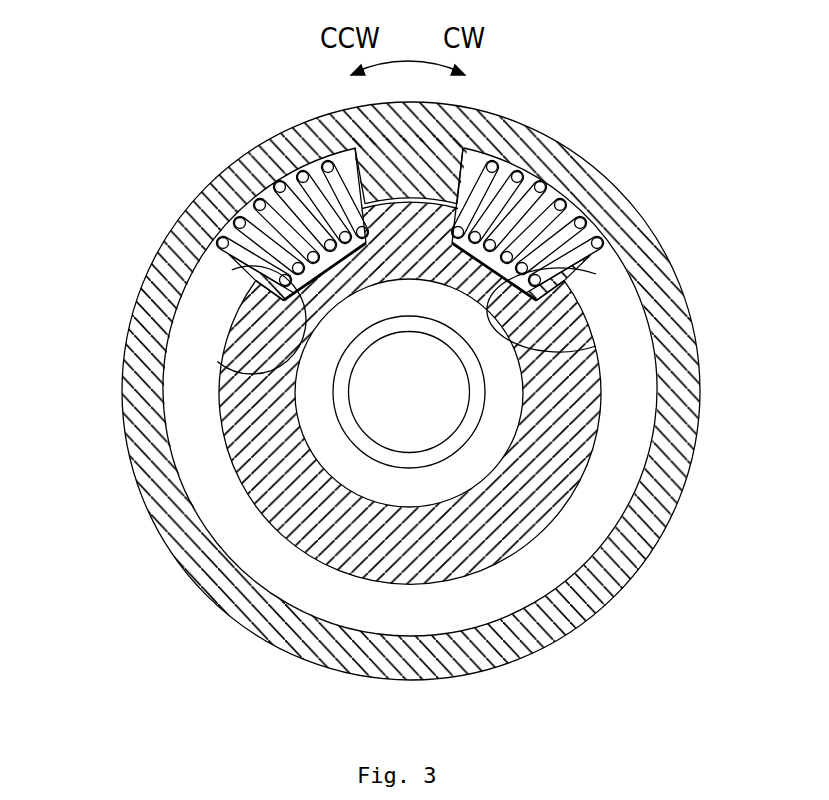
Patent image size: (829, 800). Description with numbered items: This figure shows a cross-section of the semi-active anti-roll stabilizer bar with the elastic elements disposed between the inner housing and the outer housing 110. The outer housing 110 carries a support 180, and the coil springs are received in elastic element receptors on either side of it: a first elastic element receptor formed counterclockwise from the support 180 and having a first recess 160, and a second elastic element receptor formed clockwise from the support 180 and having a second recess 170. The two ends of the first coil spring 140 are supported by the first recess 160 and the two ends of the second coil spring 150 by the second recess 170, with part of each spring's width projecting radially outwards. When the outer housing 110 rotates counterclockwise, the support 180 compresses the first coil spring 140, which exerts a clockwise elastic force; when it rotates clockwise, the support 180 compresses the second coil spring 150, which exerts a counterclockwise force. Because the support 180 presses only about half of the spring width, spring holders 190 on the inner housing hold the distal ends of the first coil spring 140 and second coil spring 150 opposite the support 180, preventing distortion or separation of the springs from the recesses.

The outer housing 110 is at (186, 226).
The first coil spring 140 is at (282, 180).
The second coil spring 150 is at (540, 190).
The first recess 160 is at (217, 361).
The second recess 170 is at (596, 346).
The support 180 is at (422, 186).
The spring holder 190 is at (240, 264).